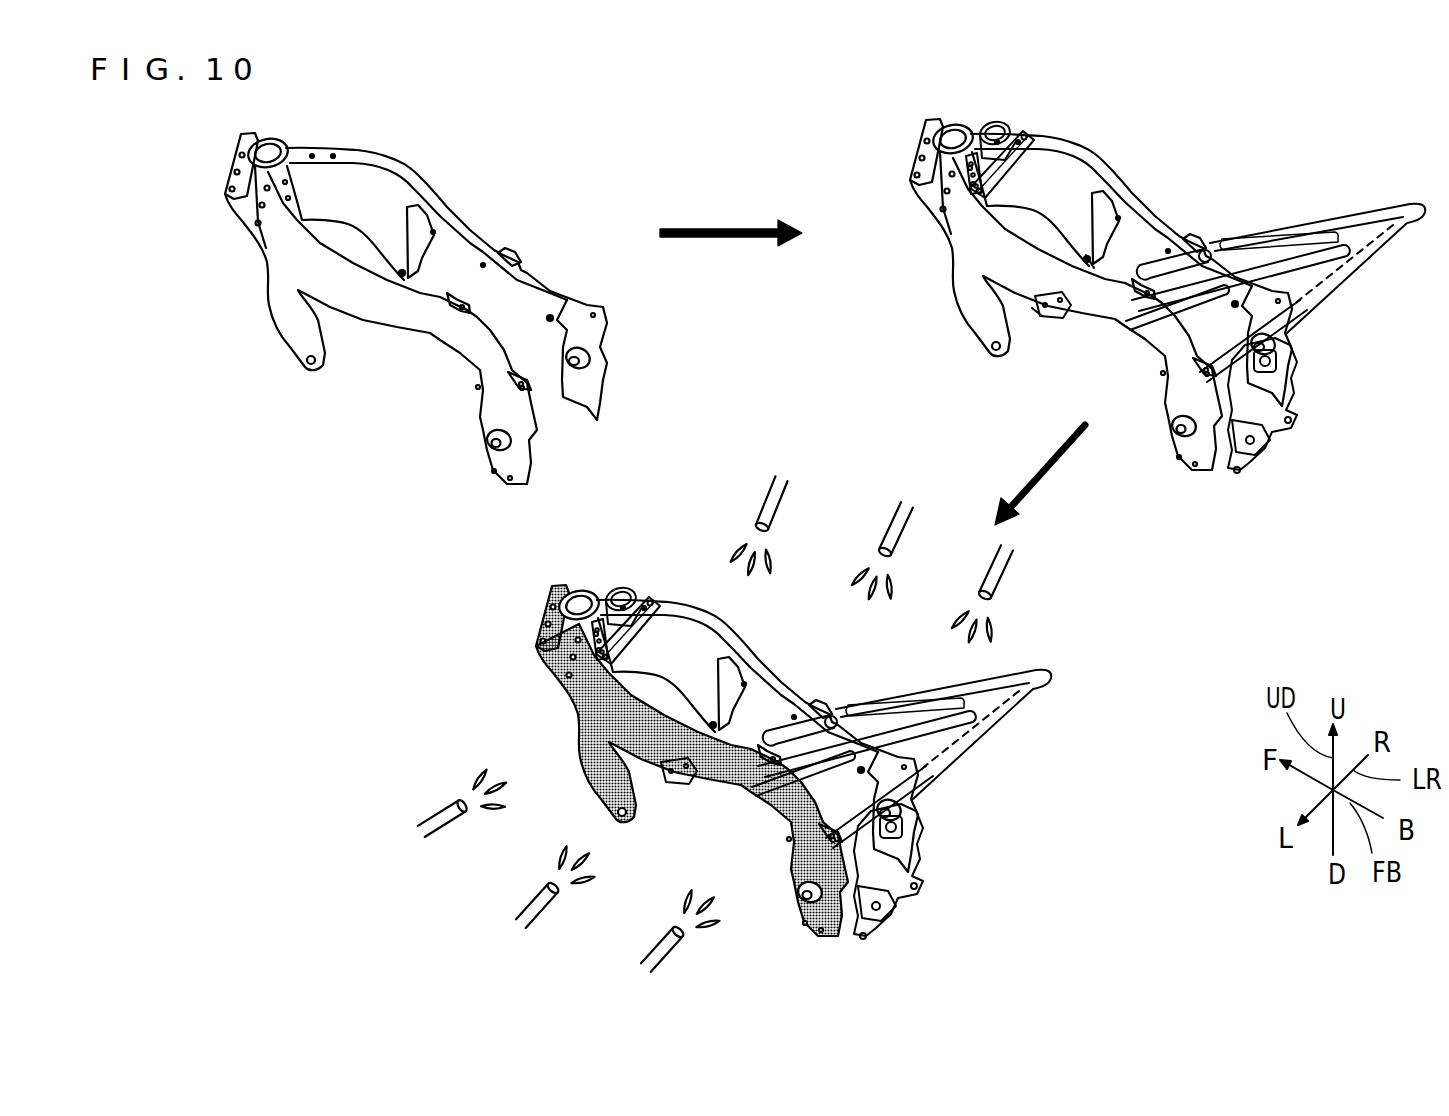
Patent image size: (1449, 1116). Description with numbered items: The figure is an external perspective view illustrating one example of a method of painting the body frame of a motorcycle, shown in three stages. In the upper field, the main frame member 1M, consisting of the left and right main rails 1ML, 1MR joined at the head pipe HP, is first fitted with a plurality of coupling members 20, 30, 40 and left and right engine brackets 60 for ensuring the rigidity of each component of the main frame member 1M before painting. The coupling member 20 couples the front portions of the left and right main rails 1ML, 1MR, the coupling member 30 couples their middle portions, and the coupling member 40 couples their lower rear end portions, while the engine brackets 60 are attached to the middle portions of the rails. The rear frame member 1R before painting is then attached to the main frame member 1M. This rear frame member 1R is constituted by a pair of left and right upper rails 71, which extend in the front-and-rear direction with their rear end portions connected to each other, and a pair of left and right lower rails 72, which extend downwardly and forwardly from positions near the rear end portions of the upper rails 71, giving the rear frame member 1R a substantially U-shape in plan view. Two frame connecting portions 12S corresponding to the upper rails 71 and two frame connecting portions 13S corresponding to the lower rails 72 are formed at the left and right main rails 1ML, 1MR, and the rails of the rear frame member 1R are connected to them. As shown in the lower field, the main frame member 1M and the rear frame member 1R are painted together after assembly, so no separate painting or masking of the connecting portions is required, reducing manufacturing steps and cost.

The main frame member 1M is at (356, 141).
The right main rail 1MR is at (444, 214).
The left main rail 1ML is at (345, 293).
The head pipe HP is at (933, 185).
The coupling member 20 is at (1005, 170).
The engine bracket 60 is at (1091, 262).
The coupling member 30 is at (1050, 303).
The frame connecting portion 12S is at (1190, 247).
The frame connecting portion 13S is at (1170, 352).
The rear frame member 1R is at (1370, 190).
The upper rail 71 is at (1240, 235).
The lower rail 72 is at (1337, 297).
The coupling member 40 is at (1262, 404).